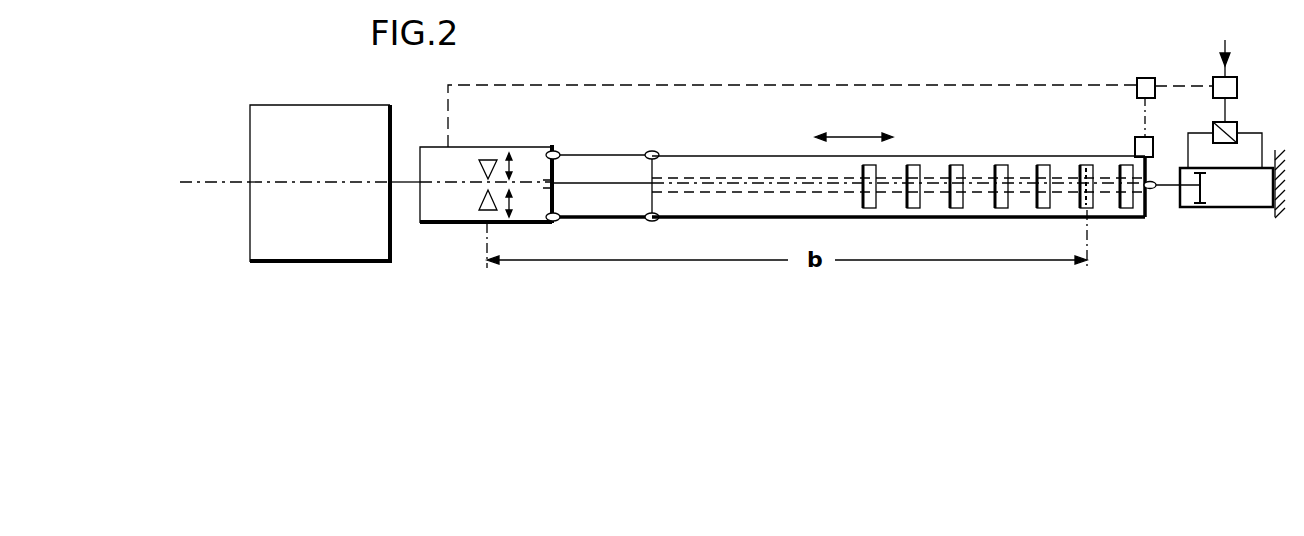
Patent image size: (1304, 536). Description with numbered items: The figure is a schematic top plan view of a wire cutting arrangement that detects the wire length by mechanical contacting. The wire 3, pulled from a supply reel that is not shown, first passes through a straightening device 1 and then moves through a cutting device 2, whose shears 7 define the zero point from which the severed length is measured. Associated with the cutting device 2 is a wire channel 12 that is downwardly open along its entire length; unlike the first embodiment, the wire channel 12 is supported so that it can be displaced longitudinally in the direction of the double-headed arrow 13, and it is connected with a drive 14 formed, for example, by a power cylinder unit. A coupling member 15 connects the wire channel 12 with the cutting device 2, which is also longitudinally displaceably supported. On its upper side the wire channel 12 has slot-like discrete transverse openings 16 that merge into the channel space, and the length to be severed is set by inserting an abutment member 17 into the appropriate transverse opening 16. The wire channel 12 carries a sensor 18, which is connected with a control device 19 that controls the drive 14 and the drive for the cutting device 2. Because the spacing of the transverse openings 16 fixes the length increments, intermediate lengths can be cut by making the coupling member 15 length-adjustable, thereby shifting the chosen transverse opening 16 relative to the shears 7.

The straightening device 1 is at (325, 110).
The cutting device 2 is at (446, 217).
The wire 3 is at (225, 180).
The shears 7 is at (488, 160).
The wire channel 12 is at (718, 155).
The double-headed arrow 13 is at (850, 136).
The drive 14 is at (1228, 207).
The coupling member 15 is at (600, 154).
The transverse openings 16 is at (955, 168).
The abutment member 17 is at (1087, 162).
The sensor 18 is at (1135, 138).
The control device 19 is at (1153, 77).